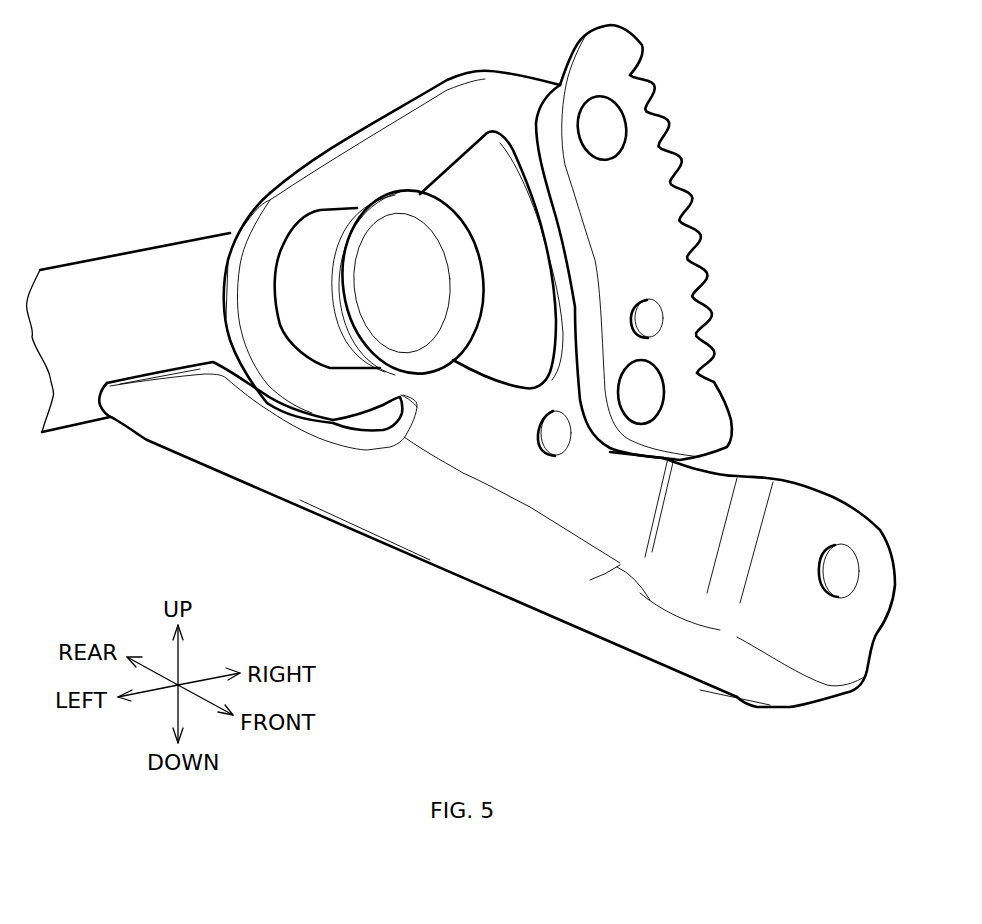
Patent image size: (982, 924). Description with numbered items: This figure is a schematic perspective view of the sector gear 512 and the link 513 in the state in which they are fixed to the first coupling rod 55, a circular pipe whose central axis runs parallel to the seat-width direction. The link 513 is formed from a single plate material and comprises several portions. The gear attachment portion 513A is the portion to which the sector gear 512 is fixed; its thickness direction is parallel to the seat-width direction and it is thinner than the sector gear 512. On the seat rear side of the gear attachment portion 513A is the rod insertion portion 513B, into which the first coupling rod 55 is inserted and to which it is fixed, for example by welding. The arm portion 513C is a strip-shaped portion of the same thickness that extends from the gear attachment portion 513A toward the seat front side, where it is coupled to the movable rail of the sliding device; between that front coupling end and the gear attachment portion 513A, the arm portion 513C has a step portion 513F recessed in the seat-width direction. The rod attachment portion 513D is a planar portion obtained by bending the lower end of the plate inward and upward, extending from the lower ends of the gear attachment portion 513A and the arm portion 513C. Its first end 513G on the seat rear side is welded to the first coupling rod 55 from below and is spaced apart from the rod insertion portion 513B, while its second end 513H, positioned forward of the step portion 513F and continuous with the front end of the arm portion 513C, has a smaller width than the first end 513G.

The first coupling rod 55 is at (103, 277).
The sector gear 512 is at (665, 230).
The link 513 is at (372, 110).
The gear attachment portion 513A is at (588, 460).
The rod insertion portion 513B is at (293, 197).
The arm portion 513C is at (813, 507).
The rod attachment portion 513D is at (440, 550).
The step portion 513F is at (717, 497).
The first end 513G is at (143, 413).
The second end 513H is at (742, 690).